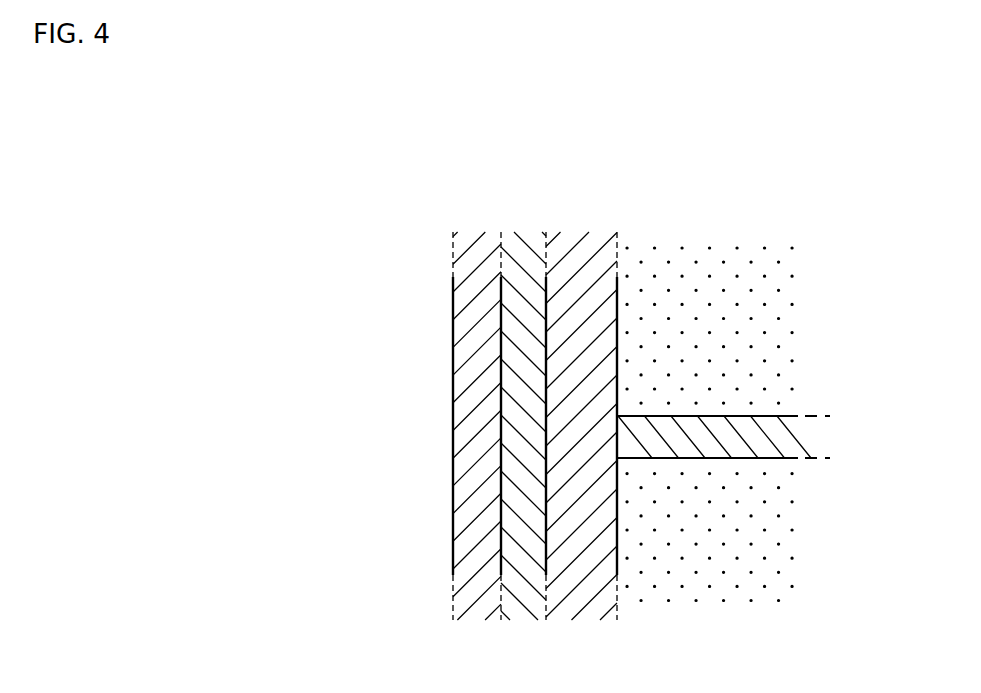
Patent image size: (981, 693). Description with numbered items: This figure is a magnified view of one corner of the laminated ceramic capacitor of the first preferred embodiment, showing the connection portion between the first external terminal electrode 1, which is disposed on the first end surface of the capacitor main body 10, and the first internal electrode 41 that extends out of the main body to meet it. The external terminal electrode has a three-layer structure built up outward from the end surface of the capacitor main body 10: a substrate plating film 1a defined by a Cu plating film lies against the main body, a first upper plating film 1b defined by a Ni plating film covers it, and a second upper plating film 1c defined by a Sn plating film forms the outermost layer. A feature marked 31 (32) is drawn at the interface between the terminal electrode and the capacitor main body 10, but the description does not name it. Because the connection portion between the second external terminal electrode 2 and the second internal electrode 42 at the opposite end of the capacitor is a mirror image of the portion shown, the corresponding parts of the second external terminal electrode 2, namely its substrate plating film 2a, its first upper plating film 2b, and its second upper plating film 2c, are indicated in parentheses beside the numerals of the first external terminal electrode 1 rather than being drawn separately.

The first external terminal electrode 1 is at (396, 408).
The second external terminal electrode 2 is at (396, 408).
The substrate plating film 1a is at (443, 426).
The substrate plating film 2a is at (545, 457).
The first upper plating film 1b is at (408, 426).
The first upper plating film 2b is at (500, 495).
The second upper plating film 1c is at (385, 426).
The second upper plating film 2c is at (453, 558).
The capacitor main body 10 is at (612, 344).
The bonding surface of laminate 31 is at (402, 426).
The bonding surface of laminate, second embodiment 32 is at (613, 392).
The first internal electrode 41 is at (766, 515).
The second internal electrode 42 is at (732, 460).